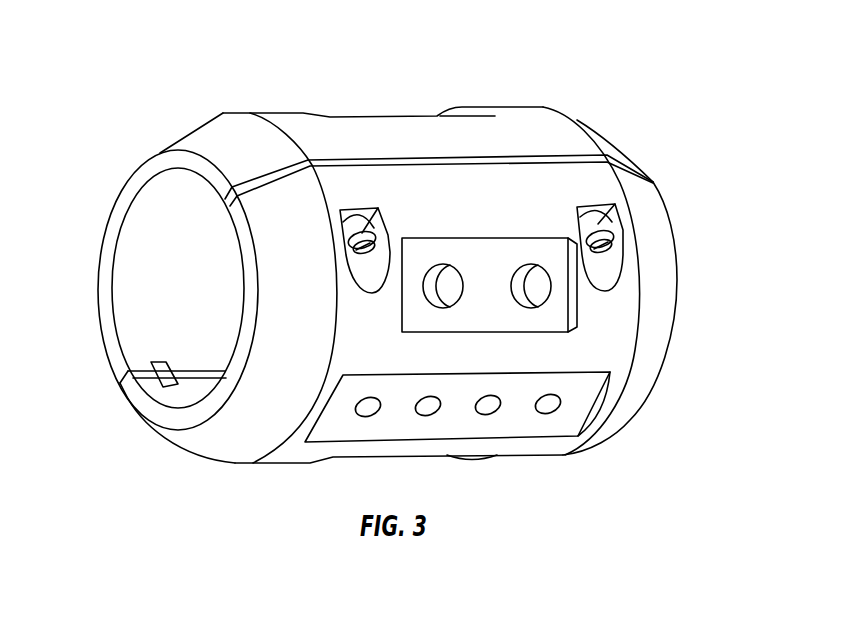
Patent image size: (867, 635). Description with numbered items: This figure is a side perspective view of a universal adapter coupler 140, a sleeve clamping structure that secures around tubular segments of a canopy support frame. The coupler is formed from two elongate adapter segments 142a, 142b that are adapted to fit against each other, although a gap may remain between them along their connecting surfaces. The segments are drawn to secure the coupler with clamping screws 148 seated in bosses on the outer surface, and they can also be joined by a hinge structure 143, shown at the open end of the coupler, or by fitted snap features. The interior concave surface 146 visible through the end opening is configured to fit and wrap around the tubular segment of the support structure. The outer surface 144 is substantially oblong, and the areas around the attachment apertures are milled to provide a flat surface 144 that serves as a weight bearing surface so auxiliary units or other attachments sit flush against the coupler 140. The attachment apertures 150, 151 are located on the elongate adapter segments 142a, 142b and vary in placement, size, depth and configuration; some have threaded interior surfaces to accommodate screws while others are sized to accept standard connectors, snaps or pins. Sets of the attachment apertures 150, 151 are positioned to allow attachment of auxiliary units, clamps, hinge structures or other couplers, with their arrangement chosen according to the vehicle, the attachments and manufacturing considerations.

The universal adapter coupler 140 is at (583, 62).
The elongate adapter segment 142a is at (213, 135).
The elongate adapter segment 142b is at (636, 385).
The hinge structure 143 is at (152, 363).
The outer surface / flat surface 144 is at (498, 212).
The interior concave surface 146 is at (196, 303).
The clamping screw 148 is at (597, 218).
The attachment aperture 150 is at (493, 408).
The attachment aperture 151 is at (541, 284).